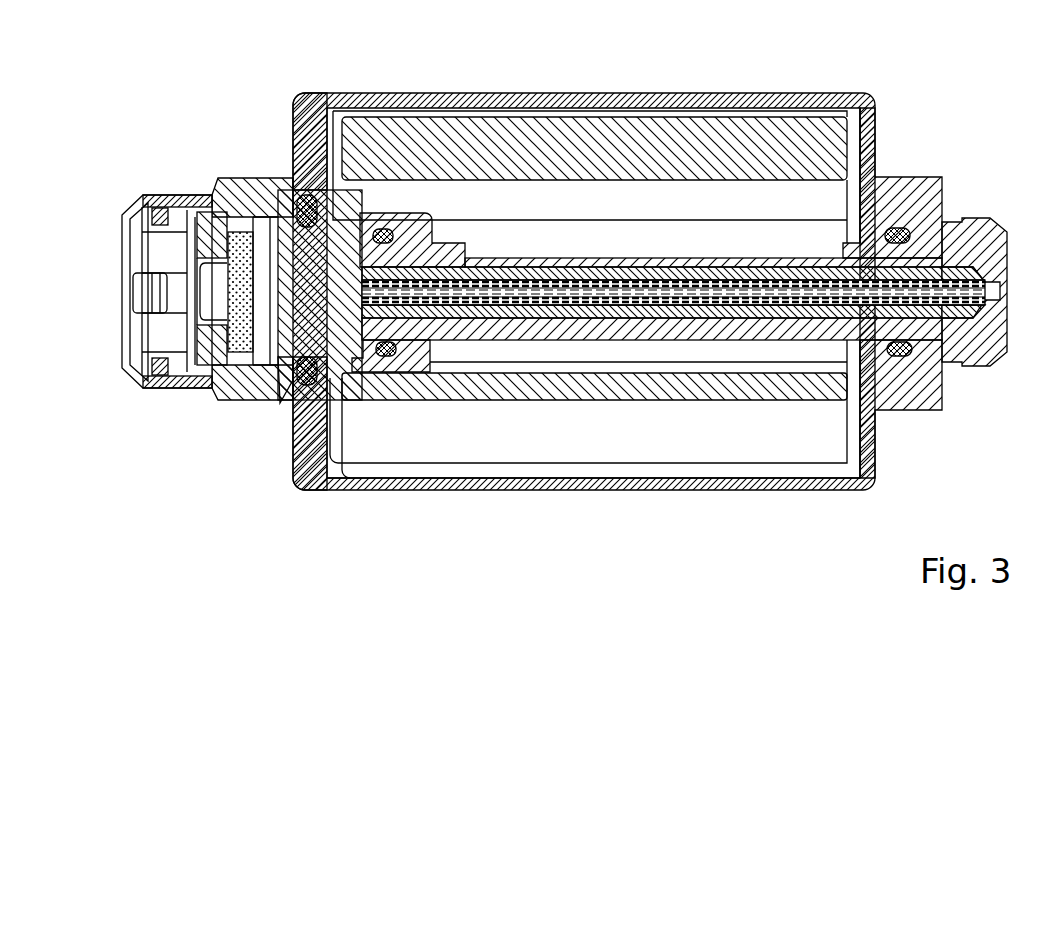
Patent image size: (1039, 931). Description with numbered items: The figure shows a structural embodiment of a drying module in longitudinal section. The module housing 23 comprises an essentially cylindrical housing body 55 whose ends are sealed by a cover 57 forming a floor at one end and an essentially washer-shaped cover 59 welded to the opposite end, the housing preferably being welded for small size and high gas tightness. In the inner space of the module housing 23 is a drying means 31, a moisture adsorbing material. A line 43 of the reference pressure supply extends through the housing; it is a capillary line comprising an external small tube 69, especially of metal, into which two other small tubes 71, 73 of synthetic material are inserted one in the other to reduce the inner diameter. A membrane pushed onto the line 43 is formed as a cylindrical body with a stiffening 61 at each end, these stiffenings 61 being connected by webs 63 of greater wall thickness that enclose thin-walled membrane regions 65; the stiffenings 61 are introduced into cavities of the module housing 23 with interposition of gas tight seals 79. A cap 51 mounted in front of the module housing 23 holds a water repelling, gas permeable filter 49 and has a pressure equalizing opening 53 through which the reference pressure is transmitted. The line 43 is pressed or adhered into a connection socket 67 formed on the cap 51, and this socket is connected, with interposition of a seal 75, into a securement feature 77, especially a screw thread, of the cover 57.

The module housing 23 is at (293, 100).
The drying means 31 is at (550, 145).
The line 43 is at (445, 305).
The filter 49 is at (240, 282).
The cap 51 is at (233, 192).
The pressure equalizing opening 53 is at (153, 232).
The housing body 55 is at (548, 485).
The cover 57 is at (293, 140).
The cover 59 is at (870, 120).
The stiffening 61 is at (450, 250).
The web 63 is at (612, 330).
The thin-walled membrane region 65 is at (615, 257).
The connection socket 67 is at (300, 348).
The external small tube 69 is at (683, 272).
The small tube 71 is at (720, 277).
The small tube 73 is at (752, 283).
The seal 75 is at (300, 340).
The securement feature 77 is at (343, 360).
The seal 79 is at (385, 240).